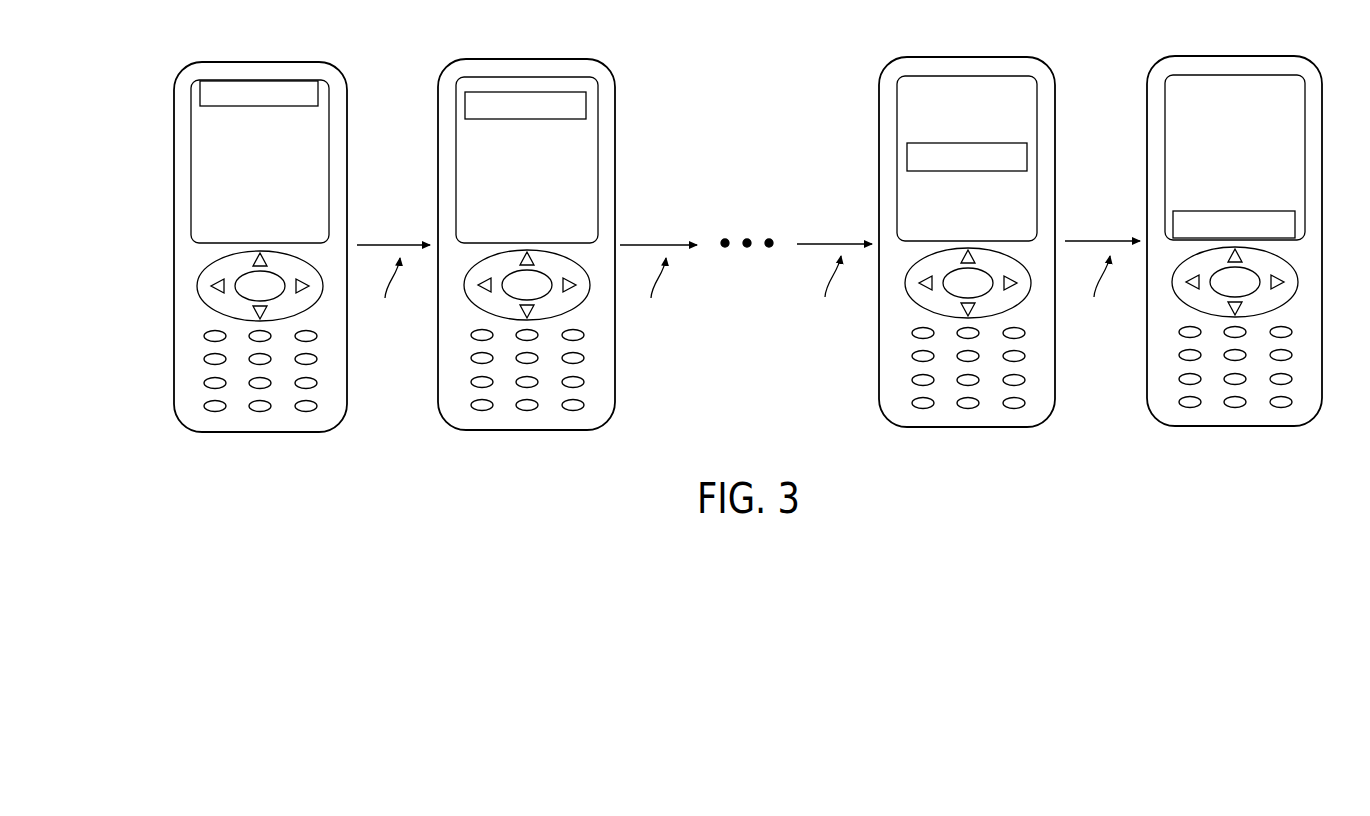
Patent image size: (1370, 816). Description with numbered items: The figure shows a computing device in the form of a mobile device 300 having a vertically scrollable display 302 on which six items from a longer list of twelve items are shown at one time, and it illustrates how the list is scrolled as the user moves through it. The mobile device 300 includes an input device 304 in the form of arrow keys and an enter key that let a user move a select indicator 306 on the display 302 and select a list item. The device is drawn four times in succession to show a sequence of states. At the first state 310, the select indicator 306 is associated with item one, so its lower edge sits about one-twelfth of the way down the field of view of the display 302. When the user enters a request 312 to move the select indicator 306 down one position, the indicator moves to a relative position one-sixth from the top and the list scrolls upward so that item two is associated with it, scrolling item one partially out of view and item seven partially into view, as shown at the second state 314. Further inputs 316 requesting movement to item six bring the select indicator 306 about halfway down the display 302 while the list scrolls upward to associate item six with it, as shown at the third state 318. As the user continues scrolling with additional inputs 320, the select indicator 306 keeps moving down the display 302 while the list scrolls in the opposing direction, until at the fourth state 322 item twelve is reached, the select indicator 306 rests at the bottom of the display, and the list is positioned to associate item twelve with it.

The mobile device 300 is at (175, 393).
The display 302 is at (191, 175).
The input device 304 is at (198, 282).
The select indicator 306 is at (207, 93).
The first display state 310 is at (359, 414).
The request 312 is at (390, 226).
The second display state 314 is at (628, 412).
The further inputs 316 is at (658, 226).
The third display state 318 is at (1069, 412).
The additional inputs 320 is at (1098, 226).
The fourth display state 322 is at (1336, 412).